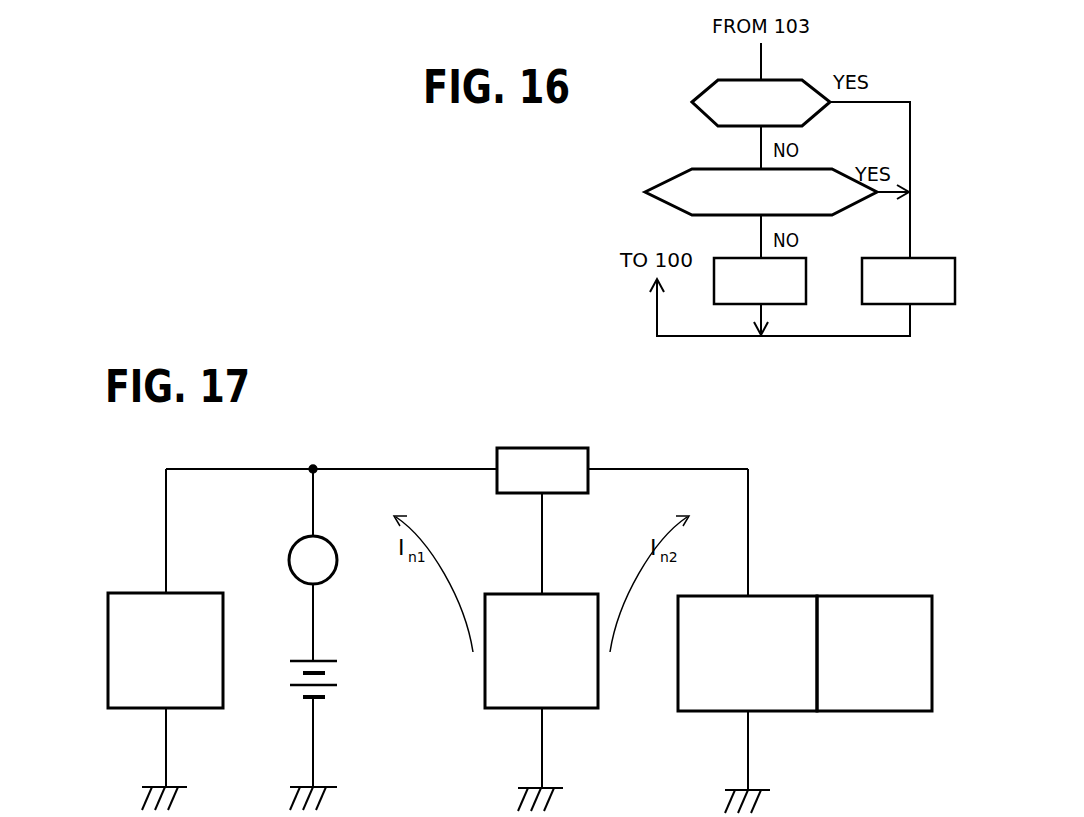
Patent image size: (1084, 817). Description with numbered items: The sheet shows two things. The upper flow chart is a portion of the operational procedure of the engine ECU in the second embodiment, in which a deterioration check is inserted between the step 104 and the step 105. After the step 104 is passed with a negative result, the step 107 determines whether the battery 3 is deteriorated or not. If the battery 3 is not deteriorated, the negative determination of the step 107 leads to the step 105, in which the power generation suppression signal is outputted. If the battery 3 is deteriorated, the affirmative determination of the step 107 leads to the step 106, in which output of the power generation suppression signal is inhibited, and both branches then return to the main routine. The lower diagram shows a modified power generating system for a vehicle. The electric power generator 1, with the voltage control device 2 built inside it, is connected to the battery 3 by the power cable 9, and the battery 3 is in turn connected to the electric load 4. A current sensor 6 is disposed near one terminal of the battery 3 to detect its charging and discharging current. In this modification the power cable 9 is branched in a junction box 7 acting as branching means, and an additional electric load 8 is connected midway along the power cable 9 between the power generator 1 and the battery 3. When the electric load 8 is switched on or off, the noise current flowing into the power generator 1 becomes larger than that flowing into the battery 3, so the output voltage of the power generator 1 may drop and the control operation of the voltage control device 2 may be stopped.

In FIG. 16, the step 104 is at (761, 103).
In FIG. 16, the step 105 is at (760, 281).
In FIG. 16, the step 106 is at (908, 281).
In FIG. 16, the step 107 is at (676, 179).
In FIG. 17, the electric power generator 1 is at (770, 596).
In FIG. 17, the voltage control device 2 is at (862, 596).
In FIG. 17, the battery 3 is at (327, 661).
In FIG. 17, the electric load 4 is at (200, 592).
In FIG. 17, the current sensor 6 is at (338, 547).
In FIG. 17, the junction box 7 is at (553, 448).
In FIG. 17, the electric load 8 is at (575, 708).
In FIG. 17, the power cable 9 is at (395, 469).